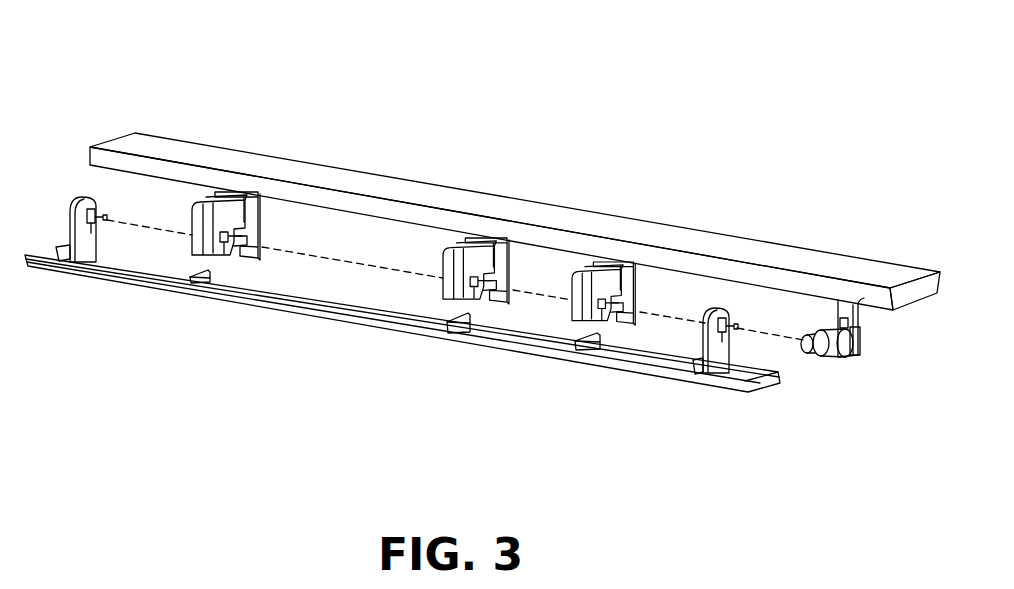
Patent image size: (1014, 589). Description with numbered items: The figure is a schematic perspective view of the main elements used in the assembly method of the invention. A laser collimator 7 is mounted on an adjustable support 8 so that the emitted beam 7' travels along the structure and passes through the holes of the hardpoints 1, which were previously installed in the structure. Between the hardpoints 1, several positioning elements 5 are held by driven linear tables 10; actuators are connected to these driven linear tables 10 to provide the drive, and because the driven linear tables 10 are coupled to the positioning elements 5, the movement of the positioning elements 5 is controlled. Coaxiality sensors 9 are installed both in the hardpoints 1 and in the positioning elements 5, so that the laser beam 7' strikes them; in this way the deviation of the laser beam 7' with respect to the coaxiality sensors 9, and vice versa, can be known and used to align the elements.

The hardpoint 1 is at (87, 247).
The positioning element 5 is at (472, 248).
The laser collimator 7 is at (822, 393).
The emitted beam 7' is at (414, 325).
The adjustable support 8 is at (857, 348).
The coaxiality sensor 9 is at (728, 318).
The driven linear table 10 is at (230, 195).